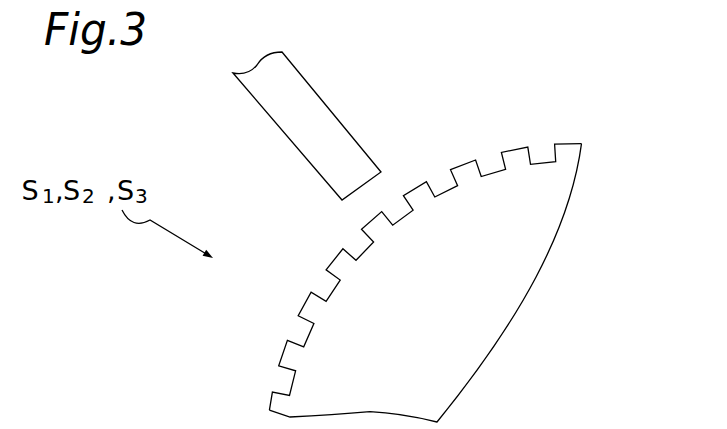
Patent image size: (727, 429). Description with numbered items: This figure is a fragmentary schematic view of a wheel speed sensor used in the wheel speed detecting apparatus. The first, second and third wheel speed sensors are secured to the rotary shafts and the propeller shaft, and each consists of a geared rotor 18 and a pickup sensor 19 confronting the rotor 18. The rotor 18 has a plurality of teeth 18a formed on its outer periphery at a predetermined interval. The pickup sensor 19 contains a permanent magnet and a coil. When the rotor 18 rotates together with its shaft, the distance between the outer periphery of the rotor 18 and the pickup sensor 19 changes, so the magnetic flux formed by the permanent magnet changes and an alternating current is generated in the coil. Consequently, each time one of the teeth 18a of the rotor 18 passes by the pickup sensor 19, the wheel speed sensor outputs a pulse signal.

The geared rotor 18 is at (540, 202).
The teeth 18a is at (405, 195).
The pickup sensor 19 is at (323, 123).